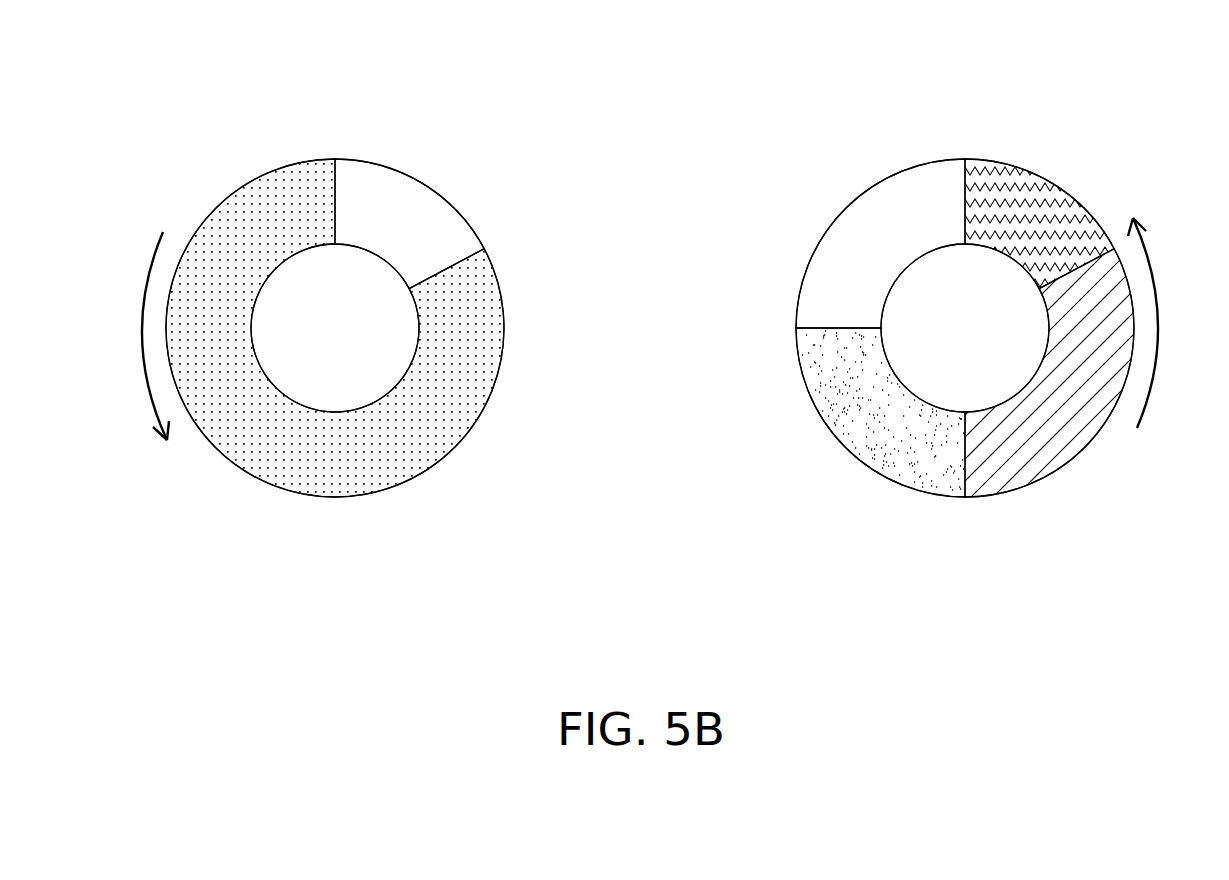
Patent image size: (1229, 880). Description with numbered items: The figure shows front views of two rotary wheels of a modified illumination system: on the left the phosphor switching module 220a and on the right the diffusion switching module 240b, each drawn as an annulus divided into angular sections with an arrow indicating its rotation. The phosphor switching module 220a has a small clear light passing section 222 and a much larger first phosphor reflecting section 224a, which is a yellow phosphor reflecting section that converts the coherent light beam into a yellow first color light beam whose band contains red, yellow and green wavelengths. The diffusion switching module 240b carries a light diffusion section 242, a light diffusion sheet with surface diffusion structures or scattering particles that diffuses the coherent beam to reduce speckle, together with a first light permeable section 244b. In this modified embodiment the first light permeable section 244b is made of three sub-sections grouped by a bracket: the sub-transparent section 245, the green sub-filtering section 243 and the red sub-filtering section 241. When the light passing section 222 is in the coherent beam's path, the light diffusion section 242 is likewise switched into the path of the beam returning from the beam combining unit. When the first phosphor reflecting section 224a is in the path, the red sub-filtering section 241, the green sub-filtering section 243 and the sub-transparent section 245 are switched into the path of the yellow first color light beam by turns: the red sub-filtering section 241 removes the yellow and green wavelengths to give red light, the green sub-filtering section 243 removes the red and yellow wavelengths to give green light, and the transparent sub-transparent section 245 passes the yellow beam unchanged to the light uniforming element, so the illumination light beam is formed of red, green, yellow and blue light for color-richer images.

The phosphor switching module 220a is at (533, 583).
The light passing section 222 is at (407, 195).
The first phosphor reflecting section 224a is at (468, 373).
The diffusion switching module 240b is at (1227, 583).
The light diffusion section 242 is at (1047, 200).
The first light permeable section 244b is at (695, 421).
The sub-transparent section 245 is at (825, 288).
The green sub-filtering section 243 is at (857, 433).
The red sub-filtering section 241 is at (1013, 477).